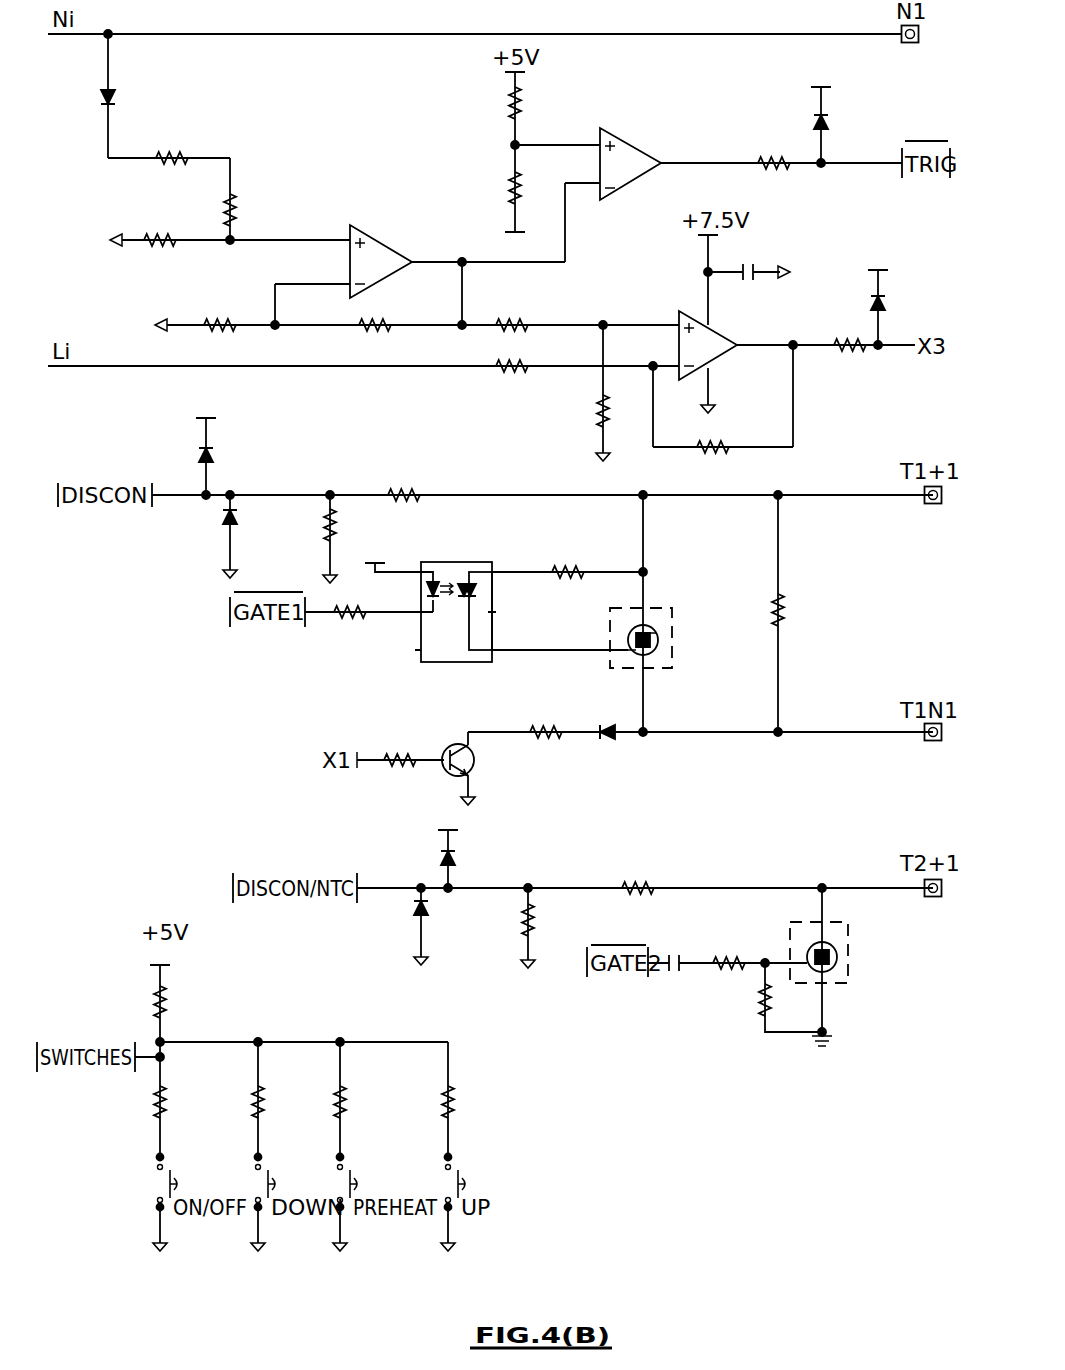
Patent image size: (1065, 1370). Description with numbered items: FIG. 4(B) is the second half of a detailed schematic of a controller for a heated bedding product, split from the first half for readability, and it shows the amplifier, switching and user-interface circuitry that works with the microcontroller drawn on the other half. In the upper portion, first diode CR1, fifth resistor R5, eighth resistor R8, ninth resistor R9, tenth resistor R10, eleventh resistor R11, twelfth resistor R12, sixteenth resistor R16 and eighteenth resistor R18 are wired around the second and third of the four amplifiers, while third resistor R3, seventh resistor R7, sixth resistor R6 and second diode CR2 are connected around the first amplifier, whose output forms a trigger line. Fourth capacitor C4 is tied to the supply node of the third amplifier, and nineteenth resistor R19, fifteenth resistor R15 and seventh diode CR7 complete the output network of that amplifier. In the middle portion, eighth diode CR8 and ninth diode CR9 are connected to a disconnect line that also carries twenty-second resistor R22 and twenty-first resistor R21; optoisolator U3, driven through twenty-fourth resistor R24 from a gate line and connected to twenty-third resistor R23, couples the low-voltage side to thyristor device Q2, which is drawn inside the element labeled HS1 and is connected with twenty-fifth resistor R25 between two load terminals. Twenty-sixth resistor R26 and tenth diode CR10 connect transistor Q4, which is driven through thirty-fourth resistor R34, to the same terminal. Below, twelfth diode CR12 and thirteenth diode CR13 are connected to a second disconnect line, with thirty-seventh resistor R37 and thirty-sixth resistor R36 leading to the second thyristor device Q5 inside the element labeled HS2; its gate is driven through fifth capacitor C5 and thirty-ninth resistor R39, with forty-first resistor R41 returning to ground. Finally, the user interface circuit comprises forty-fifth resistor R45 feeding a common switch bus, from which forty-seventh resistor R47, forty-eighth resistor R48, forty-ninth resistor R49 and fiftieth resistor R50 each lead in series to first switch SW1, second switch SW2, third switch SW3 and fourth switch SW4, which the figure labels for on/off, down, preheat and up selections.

The first diode CR1 is at (135, 96).
The fifth resistor R5 is at (169, 146).
The eighth resistor R8 is at (246, 199).
The ninth resistor R9 is at (230, 228).
The tenth resistor R10 is at (217, 313).
The eleventh resistor R11 is at (370, 313).
The twelfth resistor R12 is at (570, 313).
The sixteenth resistor R16 is at (576, 354).
The eighteenth resistor R18 is at (577, 393).
The third resistor R3 is at (497, 110).
The seventh resistor R7 is at (499, 188).
The sixth resistor R6 is at (791, 150).
The second diode CR2 is at (839, 110).
The fourth capacitor C4 is at (747, 280).
The nineteenth resistor R19 is at (723, 436).
The fifteenth resistor R15 is at (855, 333).
The seventh diode CR7 is at (897, 293).
The eighth diode CR8 is at (225, 442).
The ninth diode CR9 is at (256, 536).
The twenty-second resistor R22 is at (352, 539).
The twenty-first resistor R21 is at (407, 483).
The optoisolator U3 is at (437, 599).
The twenty-fourth resistor R24 is at (369, 622).
The twenty-third resistor R23 is at (569, 559).
The thyristor device Q2 is at (599, 613).
The heat sink HS1 is at (665, 626).
The twenty-fifth resistor R25 is at (801, 613).
The twenty-sixth resistor R26 is at (549, 719).
The tenth diode CR10 is at (614, 718).
The transistor Q4 is at (433, 768).
The thirty-fourth resistor R34 is at (402, 747).
The twelfth diode CR12 is at (474, 845).
The thirteenth diode CR13 is at (395, 926).
The thirty-seventh resistor R37 is at (551, 928).
The thirty-sixth resistor R36 is at (640, 876).
The thyristor device Q5 is at (827, 967).
The heat sink HS2 is at (843, 943).
The fifth capacitor C5 is at (680, 950).
The thirty-ninth resistor R39 is at (740, 949).
The forty-first resistor R41 is at (771, 997).
The forty-fifth resistor R45 is at (183, 1003).
The forty-seventh resistor R47 is at (183, 1099).
The forty-eighth resistor R48 is at (281, 1099).
The forty-ninth resistor R49 is at (363, 1099).
The fiftieth resistor R50 is at (471, 1099).
The first switch SW1 is at (194, 1203).
The second switch SW2 is at (292, 1203).
The third switch SW3 is at (374, 1203).
The fourth switch SW4 is at (482, 1203).